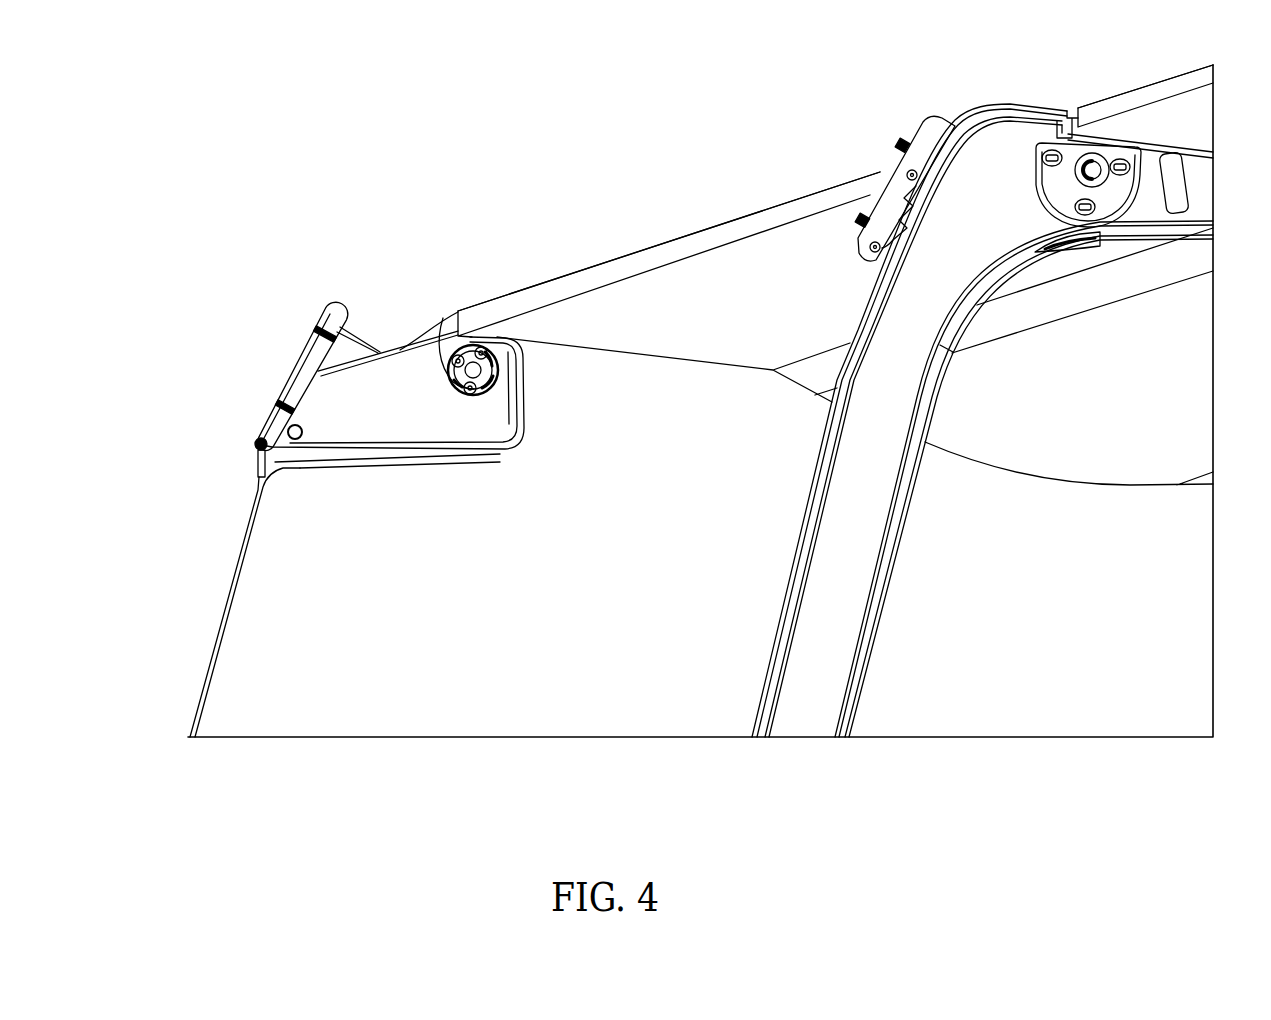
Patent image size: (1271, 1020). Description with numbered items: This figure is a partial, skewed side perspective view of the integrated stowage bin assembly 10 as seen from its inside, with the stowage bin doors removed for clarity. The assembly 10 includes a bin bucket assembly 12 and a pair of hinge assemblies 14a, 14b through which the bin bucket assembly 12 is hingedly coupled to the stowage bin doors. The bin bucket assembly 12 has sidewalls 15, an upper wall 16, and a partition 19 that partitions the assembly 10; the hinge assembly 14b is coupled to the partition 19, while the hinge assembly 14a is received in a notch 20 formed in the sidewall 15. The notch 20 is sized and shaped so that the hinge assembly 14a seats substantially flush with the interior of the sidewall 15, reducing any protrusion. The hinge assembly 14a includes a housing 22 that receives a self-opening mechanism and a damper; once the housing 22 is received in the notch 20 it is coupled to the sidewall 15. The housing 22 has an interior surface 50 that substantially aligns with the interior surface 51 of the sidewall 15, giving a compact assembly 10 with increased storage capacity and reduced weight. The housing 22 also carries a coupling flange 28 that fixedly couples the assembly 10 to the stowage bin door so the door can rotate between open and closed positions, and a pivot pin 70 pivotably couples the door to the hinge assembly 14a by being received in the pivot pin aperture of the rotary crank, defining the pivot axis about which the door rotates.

The integrated stowage bin assembly 10 is at (172, 300).
The bin bucket assembly 12 is at (623, 247).
The hinge assembly 14a is at (420, 322).
The hinge assembly 14b is at (950, 108).
The sidewall 15 is at (270, 603).
The upper wall 16 is at (726, 236).
The partition 19 is at (1025, 132).
The notch 20 is at (292, 462).
The housing 22 is at (403, 368).
The coupling flange 28 is at (307, 358).
The interior surface 50 is at (413, 421).
The interior surface 51 is at (636, 437).
The pivot pin 70 is at (441, 325).